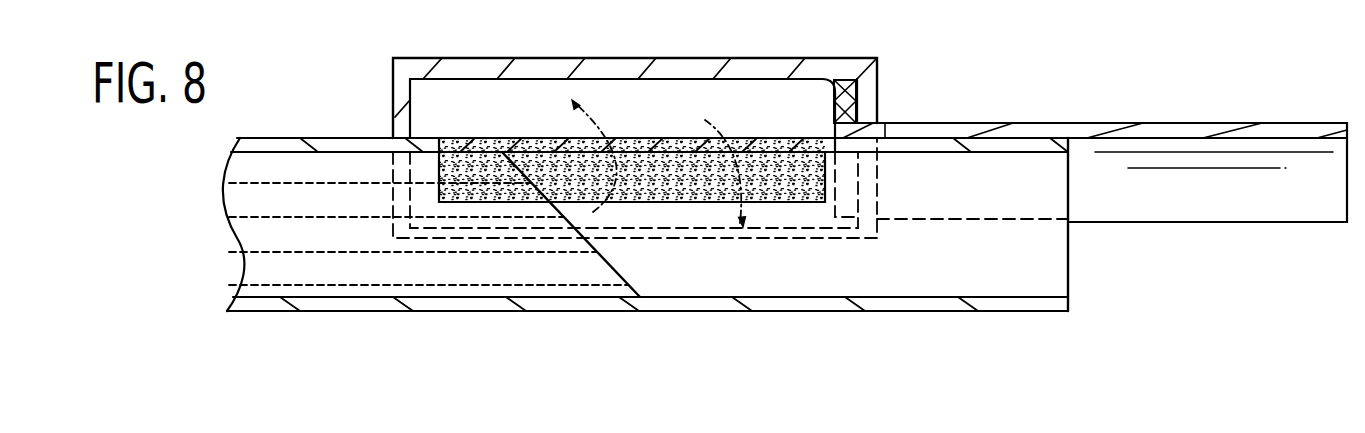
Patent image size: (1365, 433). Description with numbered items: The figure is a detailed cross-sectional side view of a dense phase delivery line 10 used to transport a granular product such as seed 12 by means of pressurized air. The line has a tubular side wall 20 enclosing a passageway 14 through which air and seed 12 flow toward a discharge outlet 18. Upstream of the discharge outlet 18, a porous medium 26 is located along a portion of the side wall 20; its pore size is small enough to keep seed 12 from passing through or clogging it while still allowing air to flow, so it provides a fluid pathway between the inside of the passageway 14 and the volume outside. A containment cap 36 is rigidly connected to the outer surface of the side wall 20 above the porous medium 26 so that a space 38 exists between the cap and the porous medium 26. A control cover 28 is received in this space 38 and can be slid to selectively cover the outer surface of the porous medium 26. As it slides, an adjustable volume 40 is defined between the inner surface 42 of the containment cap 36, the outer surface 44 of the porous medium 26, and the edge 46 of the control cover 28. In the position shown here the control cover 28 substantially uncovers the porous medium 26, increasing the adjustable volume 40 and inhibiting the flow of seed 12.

The dense phase delivery line 10 is at (328, 94).
The seed 12 is at (327, 270).
The passageway 14 is at (677, 275).
The discharge outlet 18 is at (1068, 272).
The side wall 20 is at (917, 305).
The porous medium 26 is at (803, 142).
The control cover 28 is at (1240, 132).
The containment cap 36 is at (762, 68).
The space 38 is at (498, 129).
The adjustable volume 40 is at (462, 115).
The inner surface 42 is at (665, 79).
The outer surface 44 is at (668, 140).
The edge 46 is at (823, 80).